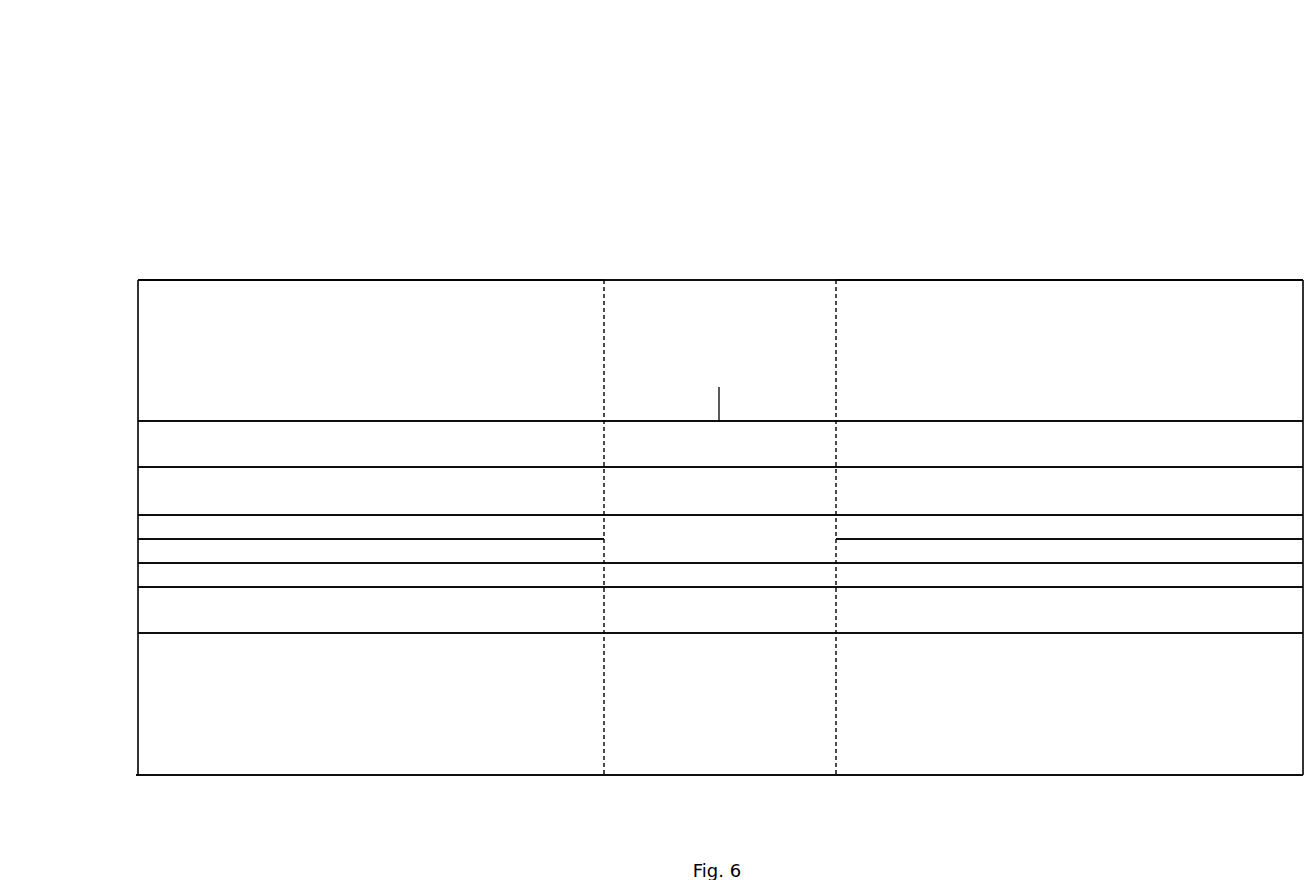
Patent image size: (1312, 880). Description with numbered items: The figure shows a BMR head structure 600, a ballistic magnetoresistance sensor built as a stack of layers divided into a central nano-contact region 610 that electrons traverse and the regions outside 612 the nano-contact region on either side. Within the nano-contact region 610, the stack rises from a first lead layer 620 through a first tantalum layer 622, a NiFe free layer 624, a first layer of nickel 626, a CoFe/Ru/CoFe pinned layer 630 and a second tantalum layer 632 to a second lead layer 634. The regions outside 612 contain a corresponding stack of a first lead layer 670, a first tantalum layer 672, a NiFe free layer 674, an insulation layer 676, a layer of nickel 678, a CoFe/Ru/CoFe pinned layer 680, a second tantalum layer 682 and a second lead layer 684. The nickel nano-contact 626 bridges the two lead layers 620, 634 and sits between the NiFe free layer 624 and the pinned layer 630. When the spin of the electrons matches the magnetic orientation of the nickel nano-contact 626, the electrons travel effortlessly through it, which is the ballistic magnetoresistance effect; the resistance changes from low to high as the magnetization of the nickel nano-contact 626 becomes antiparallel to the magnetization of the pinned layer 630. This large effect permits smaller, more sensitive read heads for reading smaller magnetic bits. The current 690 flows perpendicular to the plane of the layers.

The BMR head structure 600 is at (383, 115).
The nano-contact region 610 is at (743, 257).
The region outside the nano-contact region 612 is at (335, 268).
The first lead layer 620 is at (720, 704).
The first tantalum layer 622 is at (720, 610).
The NiFe free layer 624 is at (720, 575).
The first layer of nickel 626 is at (720, 539).
The CoFe/Ru/CoFe pinned layer 630 is at (720, 491).
The second tantalum layer 632 is at (720, 444).
The second lead layer 634 is at (720, 350).
The first lead layer 670 is at (719, 704).
The first tantalum layer 672 is at (720, 610).
The NiFe free layer 674 is at (720, 575).
The insulation layer 676 is at (720, 551).
The layer of nickel 678 is at (720, 527).
The CoFe/Ru/CoFe pinned layer 680 is at (720, 491).
The second tantalum layer 682 is at (720, 444).
The second lead layer 684 is at (720, 350).
The current 690 is at (718, 427).